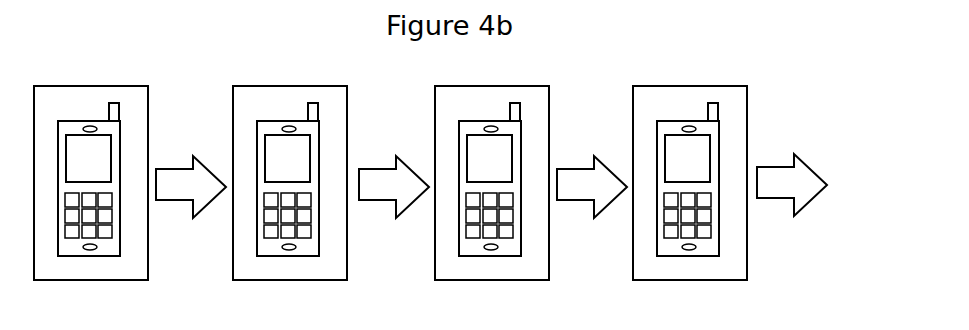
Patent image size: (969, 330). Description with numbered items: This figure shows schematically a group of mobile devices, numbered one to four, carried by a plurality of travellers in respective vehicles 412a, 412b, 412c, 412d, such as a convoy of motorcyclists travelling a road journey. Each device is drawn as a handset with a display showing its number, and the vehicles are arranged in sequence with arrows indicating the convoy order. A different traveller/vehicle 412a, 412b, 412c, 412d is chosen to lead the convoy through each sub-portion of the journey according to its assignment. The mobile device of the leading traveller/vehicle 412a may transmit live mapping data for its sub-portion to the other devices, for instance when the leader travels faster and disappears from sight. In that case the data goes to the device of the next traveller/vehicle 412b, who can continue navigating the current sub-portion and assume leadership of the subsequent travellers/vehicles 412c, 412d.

The leading traveller/vehicle 412a is at (690, 183).
The next traveller/vehicle 412b is at (492, 183).
The subsequent traveller/vehicle 412c is at (290, 183).
The subsequent traveller/vehicle 412d is at (91, 183).